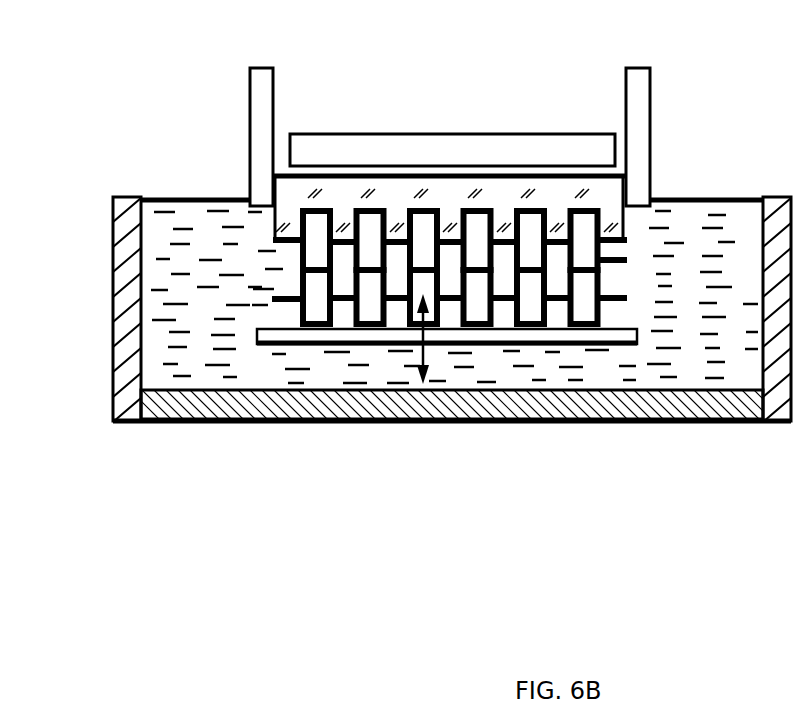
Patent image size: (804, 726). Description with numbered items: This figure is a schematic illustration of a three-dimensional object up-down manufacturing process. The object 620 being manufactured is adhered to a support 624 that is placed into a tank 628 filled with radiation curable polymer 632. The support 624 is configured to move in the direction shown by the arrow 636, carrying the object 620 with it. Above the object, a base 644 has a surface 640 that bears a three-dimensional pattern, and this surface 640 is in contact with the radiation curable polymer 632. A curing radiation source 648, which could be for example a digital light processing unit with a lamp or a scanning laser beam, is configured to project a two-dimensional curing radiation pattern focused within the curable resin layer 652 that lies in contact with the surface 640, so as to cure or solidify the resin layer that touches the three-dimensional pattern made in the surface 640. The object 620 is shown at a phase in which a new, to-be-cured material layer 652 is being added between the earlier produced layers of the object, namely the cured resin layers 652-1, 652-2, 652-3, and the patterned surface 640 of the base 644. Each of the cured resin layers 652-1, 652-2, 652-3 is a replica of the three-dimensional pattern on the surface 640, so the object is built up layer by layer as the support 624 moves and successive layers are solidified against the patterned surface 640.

The 3D object 620 is at (266, 253).
The support 624 is at (262, 342).
The tank 628 is at (168, 162).
The radiation curable polymer 632 is at (165, 262).
The arrow 636 is at (423, 368).
The surface 640 is at (507, 235).
The base 644 is at (565, 193).
The curing radiation source 648 is at (392, 147).
The curable resin layer 652 is at (623, 240).
The cured resin layer 652-1 is at (602, 305).
The cured resin layer 652-2 is at (600, 280).
The cured resin layer 652-3 is at (600, 260).